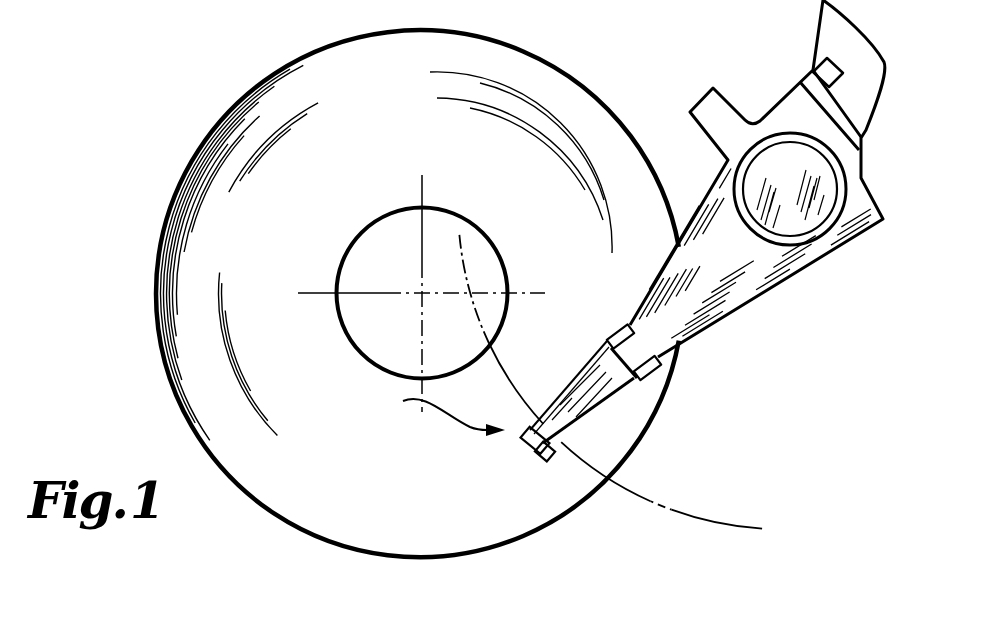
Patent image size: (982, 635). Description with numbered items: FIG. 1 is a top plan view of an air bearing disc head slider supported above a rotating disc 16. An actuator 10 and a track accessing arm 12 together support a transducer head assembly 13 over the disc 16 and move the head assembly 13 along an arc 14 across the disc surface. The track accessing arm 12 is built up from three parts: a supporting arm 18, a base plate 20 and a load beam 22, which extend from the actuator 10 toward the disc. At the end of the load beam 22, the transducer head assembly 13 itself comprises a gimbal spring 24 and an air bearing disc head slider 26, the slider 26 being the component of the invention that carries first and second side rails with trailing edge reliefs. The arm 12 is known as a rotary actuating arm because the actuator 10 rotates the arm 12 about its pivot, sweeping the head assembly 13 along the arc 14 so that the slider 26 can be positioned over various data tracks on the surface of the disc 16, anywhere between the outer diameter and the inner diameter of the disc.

The actuator 10 is at (782, 205).
The track accessing arm 12 is at (705, 352).
The transducer head assembly 13 is at (440, 412).
The arc 14 is at (687, 510).
The disc 16 is at (578, 77).
The supporting arm 18 is at (714, 180).
The base plate 20 is at (623, 327).
The load beam 22 is at (607, 363).
The gimbal spring 24 is at (537, 450).
The air bearing disc head slider 26 is at (556, 458).